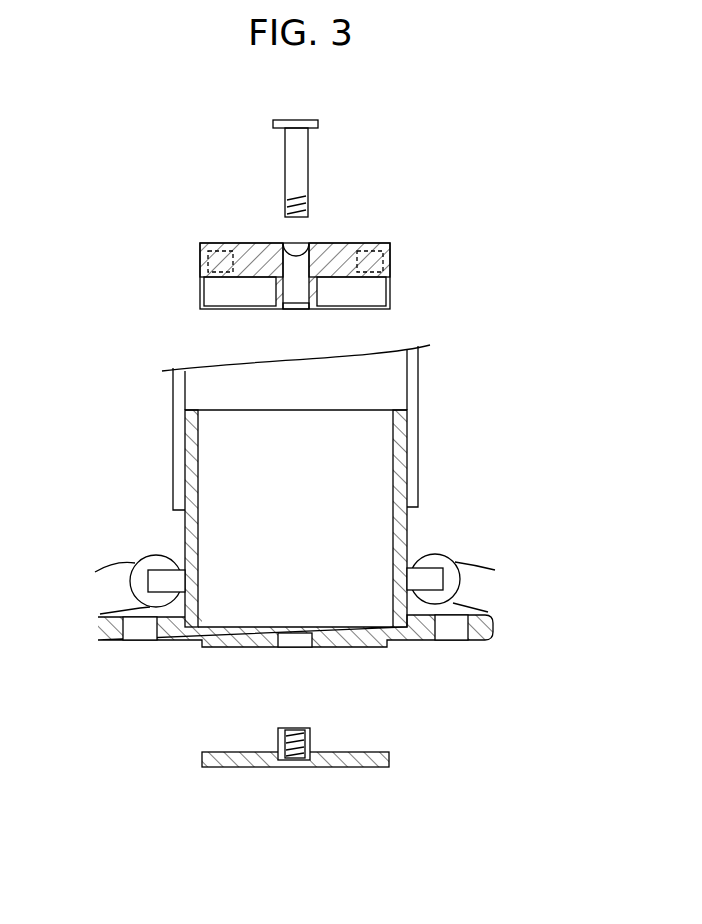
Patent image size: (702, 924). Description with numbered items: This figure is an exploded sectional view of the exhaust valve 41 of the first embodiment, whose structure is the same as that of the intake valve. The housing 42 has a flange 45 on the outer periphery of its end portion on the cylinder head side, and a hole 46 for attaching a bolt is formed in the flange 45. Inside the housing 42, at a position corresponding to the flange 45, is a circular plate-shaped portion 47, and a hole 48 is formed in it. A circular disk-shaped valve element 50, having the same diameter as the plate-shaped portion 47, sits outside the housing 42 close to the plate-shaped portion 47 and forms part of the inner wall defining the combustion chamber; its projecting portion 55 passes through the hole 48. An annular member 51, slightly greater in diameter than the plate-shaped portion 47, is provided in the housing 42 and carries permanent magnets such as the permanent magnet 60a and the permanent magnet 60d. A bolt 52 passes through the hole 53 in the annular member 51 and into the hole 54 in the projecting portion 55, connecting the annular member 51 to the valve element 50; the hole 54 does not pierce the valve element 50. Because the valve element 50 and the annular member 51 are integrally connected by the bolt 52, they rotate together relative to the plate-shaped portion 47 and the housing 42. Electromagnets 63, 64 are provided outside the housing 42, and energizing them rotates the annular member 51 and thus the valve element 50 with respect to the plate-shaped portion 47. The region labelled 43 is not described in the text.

The exhaust valve 41 is at (308, 516).
The housing 42 is at (412, 518).
The partition wall 43 is at (232, 409).
The flange 45 is at (333, 654).
The hole 46 is at (462, 626).
The plate-shaped portion 47 is at (294, 667).
The hole 48 is at (290, 648).
The valve element 50 is at (298, 786).
The annular member 51 is at (296, 243).
The bolt 52 is at (297, 120).
The hole 53 is at (295, 243).
The hole 54 is at (302, 760).
The projecting portion 55 is at (338, 771).
The permanent magnet 60a is at (392, 258).
The permanent magnet 60d is at (200, 258).
The electromagnet 63 is at (458, 553).
The electromagnet 64 is at (146, 552).